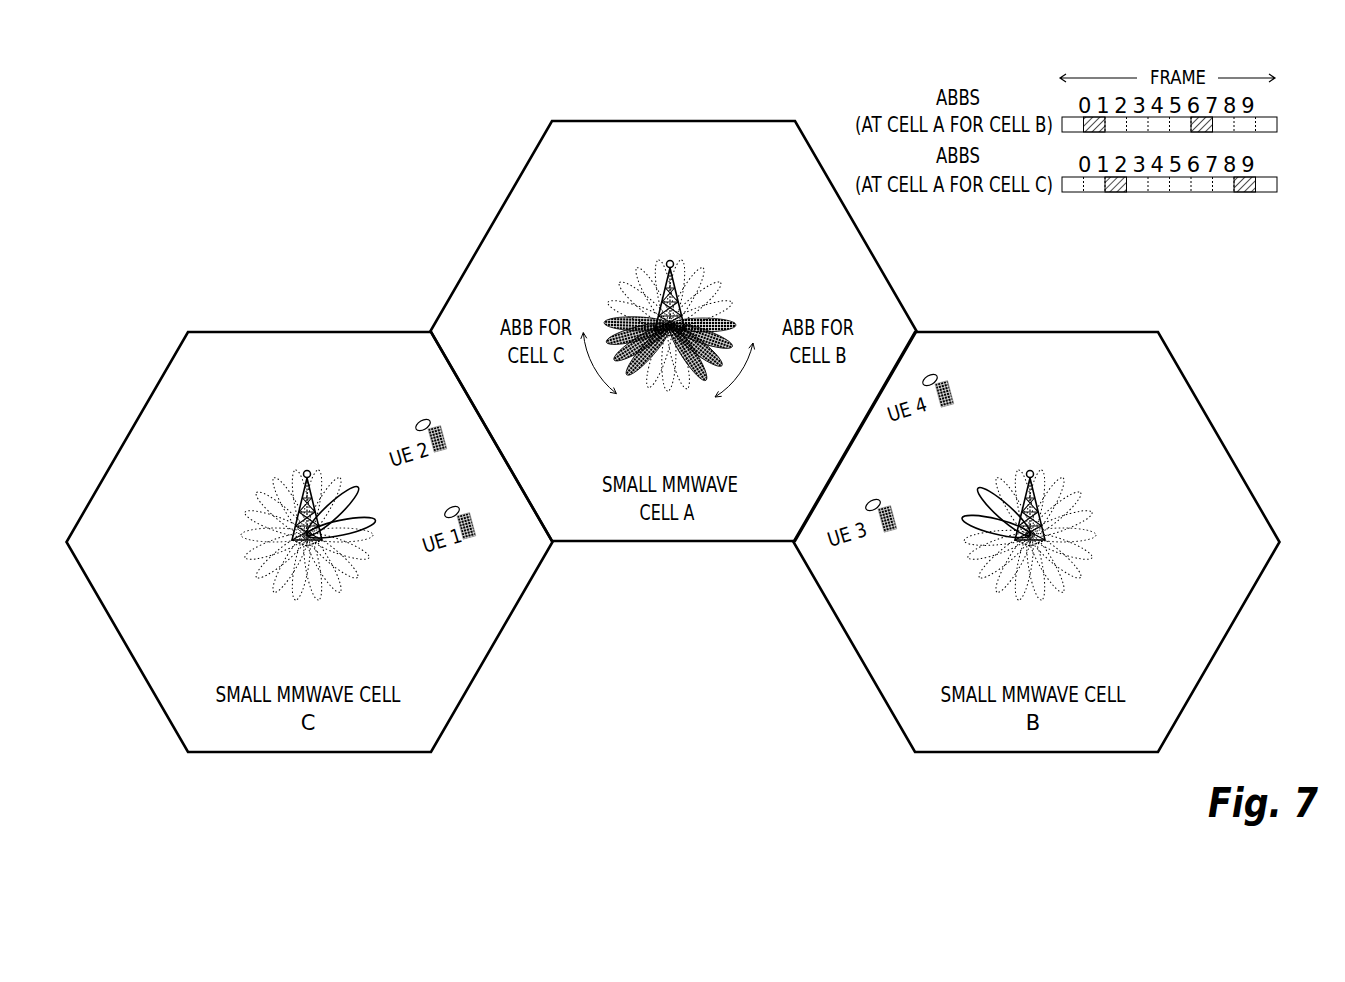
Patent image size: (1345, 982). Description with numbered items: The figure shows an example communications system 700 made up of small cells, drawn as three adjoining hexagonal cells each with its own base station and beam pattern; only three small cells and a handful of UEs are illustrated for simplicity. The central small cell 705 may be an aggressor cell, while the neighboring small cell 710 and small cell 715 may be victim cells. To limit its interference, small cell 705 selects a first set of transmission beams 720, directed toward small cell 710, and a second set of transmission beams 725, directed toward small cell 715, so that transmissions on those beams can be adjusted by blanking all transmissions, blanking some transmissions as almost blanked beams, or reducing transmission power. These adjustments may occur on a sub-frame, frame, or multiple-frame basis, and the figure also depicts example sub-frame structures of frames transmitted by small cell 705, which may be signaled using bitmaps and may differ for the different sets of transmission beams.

The communications system 700 is at (196, 93).
The small cell 705 is at (605, 282).
The small cell 710 is at (1077, 485).
The small cell 715 is at (232, 500).
The first set of transmission beams 720 is at (740, 387).
The second set of transmission beams 725 is at (597, 387).